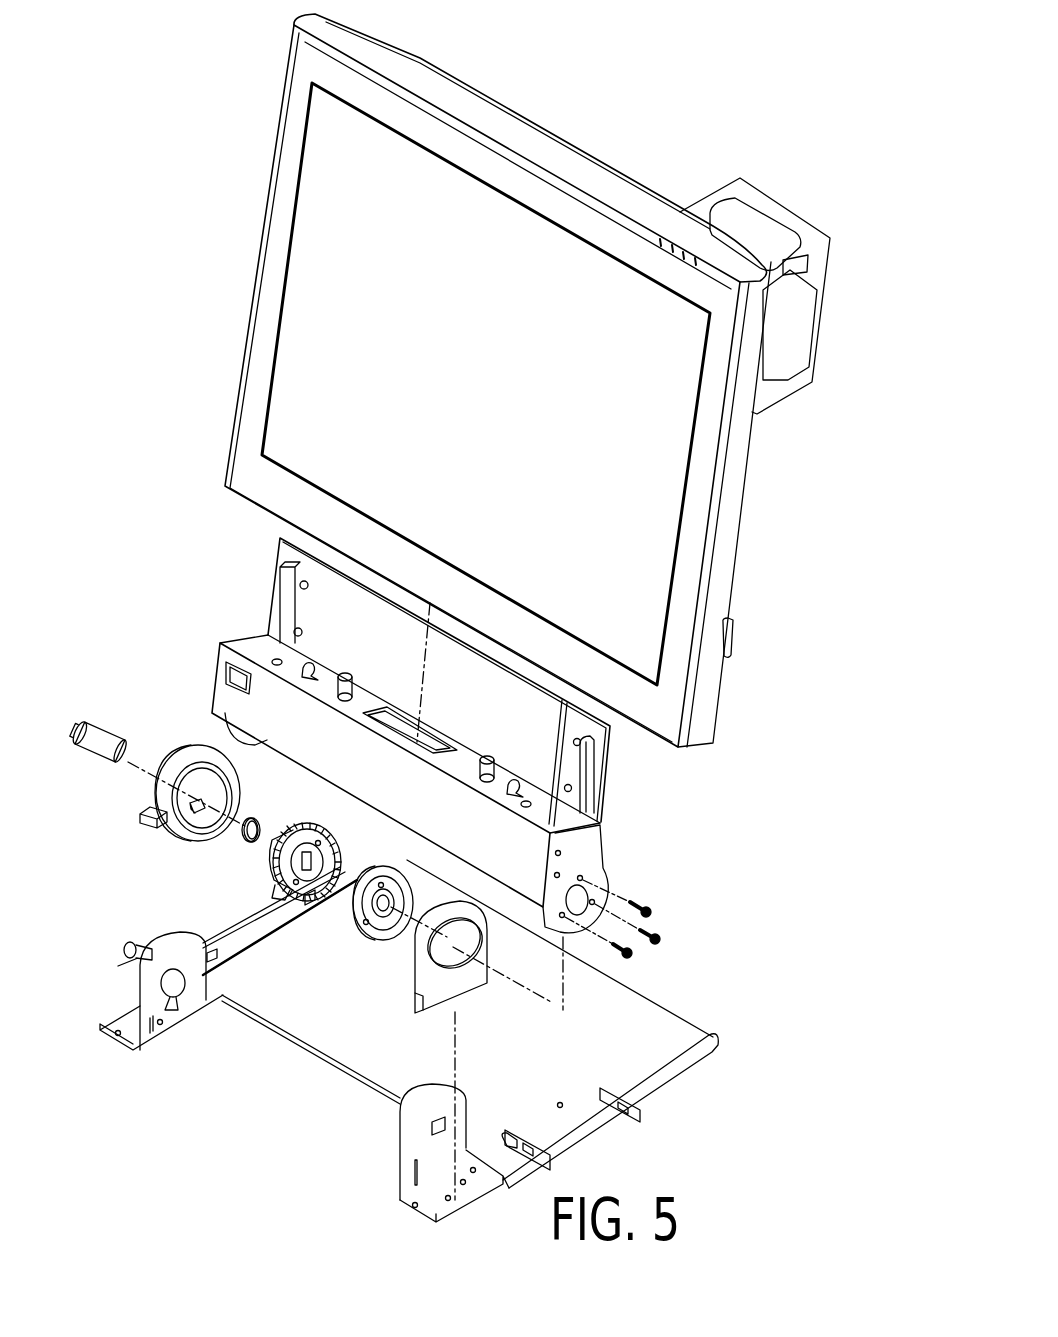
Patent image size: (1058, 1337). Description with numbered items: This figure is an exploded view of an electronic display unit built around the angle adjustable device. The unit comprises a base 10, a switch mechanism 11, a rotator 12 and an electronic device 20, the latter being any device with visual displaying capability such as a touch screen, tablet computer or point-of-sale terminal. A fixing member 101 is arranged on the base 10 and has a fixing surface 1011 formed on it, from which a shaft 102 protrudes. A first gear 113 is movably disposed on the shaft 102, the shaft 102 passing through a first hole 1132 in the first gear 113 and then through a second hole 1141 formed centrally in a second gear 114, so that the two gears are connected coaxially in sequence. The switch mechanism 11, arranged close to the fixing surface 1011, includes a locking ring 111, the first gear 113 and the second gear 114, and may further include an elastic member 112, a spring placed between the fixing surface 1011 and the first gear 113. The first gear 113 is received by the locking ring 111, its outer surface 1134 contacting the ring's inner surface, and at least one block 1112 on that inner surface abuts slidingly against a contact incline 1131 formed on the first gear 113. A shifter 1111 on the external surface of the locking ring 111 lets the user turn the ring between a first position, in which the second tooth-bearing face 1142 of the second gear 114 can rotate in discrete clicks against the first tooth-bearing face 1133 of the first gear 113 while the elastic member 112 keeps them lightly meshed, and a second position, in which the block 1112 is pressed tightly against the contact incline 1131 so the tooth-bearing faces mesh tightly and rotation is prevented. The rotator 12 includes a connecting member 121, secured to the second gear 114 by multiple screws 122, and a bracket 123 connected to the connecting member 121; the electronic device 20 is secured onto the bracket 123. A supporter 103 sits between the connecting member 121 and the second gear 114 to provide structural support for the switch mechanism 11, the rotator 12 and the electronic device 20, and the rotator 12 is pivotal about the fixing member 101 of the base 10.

The electronic device 20 is at (310, 213).
The base 10 is at (470, 1041).
The fixing member 101 is at (417, 1153).
The fixing surface 1011 is at (422, 1127).
The shaft 102 is at (100, 725).
The supporter 103 is at (470, 977).
The switch mechanism 11 is at (244, 860).
The locking ring 111 is at (141, 774).
The shifter 1111 is at (160, 793).
The block 1112 is at (195, 803).
The elastic member 112 is at (247, 817).
The first gear 113 is at (281, 900).
The contact incline 1131 is at (299, 815).
The first hole 1132 is at (282, 884).
The first tooth-bearing face 1133 is at (340, 822).
The outer surface 1134 is at (270, 852).
The second gear 114 is at (373, 906).
The second hole 1141 is at (384, 910).
The second tooth-bearing face 1142 is at (338, 893).
The rotator 12 is at (490, 774).
The connecting member 121 is at (583, 857).
The screws 122 is at (643, 919).
The bracket 123 is at (540, 830).